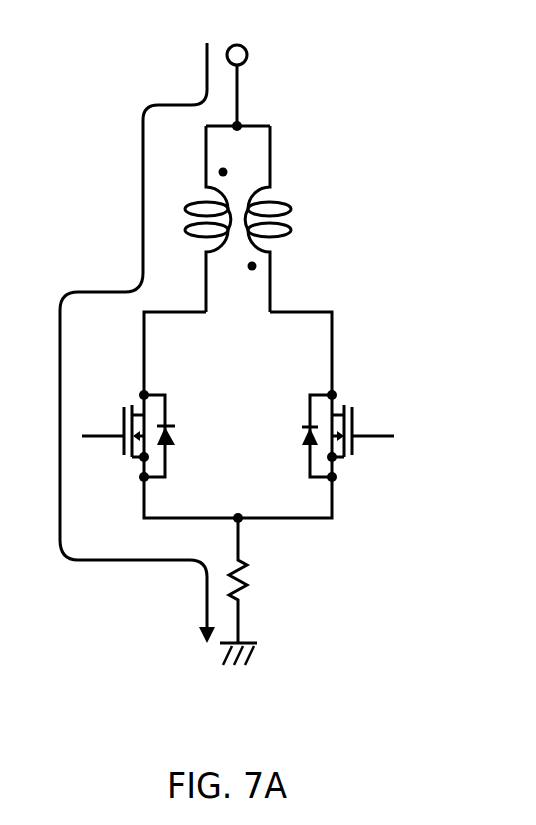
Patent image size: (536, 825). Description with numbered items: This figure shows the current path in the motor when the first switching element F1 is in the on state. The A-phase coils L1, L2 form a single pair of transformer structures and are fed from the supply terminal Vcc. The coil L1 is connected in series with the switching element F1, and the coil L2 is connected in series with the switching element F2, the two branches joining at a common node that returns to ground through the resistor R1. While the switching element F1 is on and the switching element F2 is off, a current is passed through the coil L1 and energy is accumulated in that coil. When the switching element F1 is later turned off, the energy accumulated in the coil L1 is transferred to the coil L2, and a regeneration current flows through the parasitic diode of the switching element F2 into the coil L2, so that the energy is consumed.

The power supply terminal Vcc is at (244, 64).
The A-phase coil L1 is at (194, 219).
The A-phase coil L2 is at (278, 219).
The switching element F1 is at (128, 437).
The switching element F2 is at (349, 436).
The resistor R1 is at (258, 580).